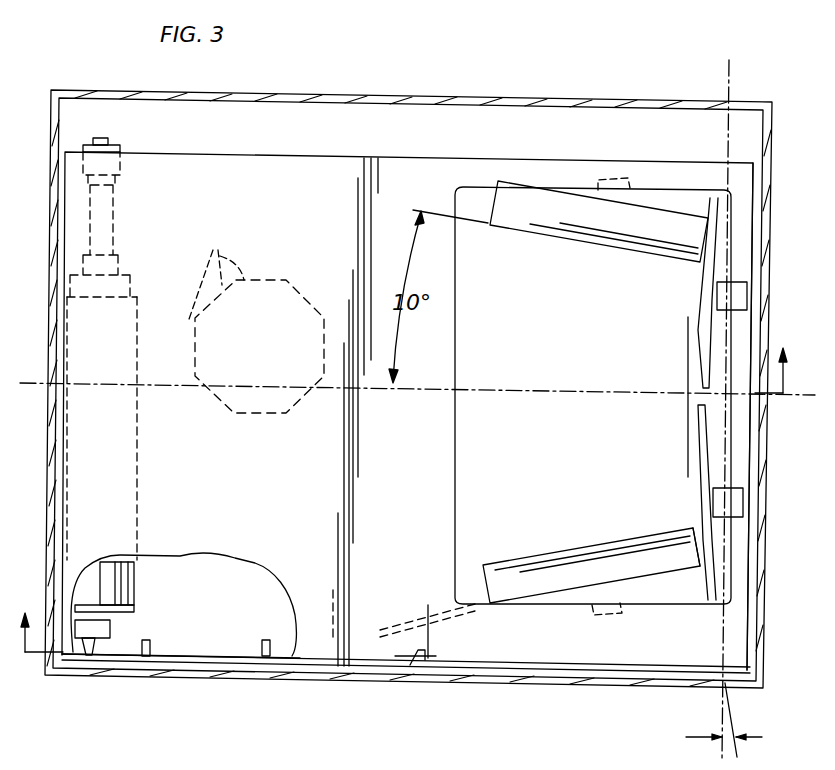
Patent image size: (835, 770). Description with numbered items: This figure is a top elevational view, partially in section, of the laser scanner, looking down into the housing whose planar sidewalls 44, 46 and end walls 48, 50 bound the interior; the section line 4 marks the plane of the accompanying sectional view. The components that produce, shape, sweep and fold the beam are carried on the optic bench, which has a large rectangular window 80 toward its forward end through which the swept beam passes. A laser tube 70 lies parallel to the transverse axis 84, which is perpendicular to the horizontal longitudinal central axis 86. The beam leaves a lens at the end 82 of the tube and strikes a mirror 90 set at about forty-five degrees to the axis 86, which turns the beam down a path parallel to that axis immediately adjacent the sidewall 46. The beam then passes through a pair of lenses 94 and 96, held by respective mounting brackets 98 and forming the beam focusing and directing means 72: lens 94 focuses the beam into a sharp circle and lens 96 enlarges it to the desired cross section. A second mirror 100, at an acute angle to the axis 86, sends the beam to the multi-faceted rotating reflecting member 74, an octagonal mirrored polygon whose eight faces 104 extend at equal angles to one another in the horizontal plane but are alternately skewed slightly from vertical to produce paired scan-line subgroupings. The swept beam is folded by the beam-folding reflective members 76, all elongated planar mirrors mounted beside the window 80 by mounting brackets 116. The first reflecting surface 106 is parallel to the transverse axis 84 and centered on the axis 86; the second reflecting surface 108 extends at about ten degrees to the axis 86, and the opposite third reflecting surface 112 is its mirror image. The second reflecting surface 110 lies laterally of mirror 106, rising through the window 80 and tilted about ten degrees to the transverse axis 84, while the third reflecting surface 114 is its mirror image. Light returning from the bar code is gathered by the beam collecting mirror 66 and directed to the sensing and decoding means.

The sidewall 44 is at (594, 102).
The transverse axis 84 is at (735, 90).
The mounting brackets 116 is at (615, 190).
The third reflecting surface 112 is at (566, 240).
The third reflecting surface 114 is at (706, 297).
The section line 4- 4 is at (399, 488).
The faces 104 is at (216, 275).
The longitudinal central axis 86 is at (126, 382).
The end wall 50 is at (55, 430).
The multi-faceted rotating reflecting member 74 is at (270, 425).
The laser tube 70 is at (137, 510).
The window 80 is at (457, 466).
The first reflecting surface 106 is at (695, 408).
The beam-folding reflective members 76 is at (684, 438).
The second reflecting surface 110 is at (707, 517).
The beam collecting mirror 66 is at (428, 603).
The second mirror 100 is at (422, 668).
The mounting brackets 98 is at (160, 650).
The end of the laser tube 82 is at (116, 630).
The beam focusing and directing means 72 is at (232, 648).
The mirror 90 is at (88, 660).
The lens 94 is at (146, 658).
The lens 96 is at (268, 658).
The second reflecting surface 108 is at (536, 600).
The sidewall 46 is at (592, 690).
The end wall 48 is at (764, 655).